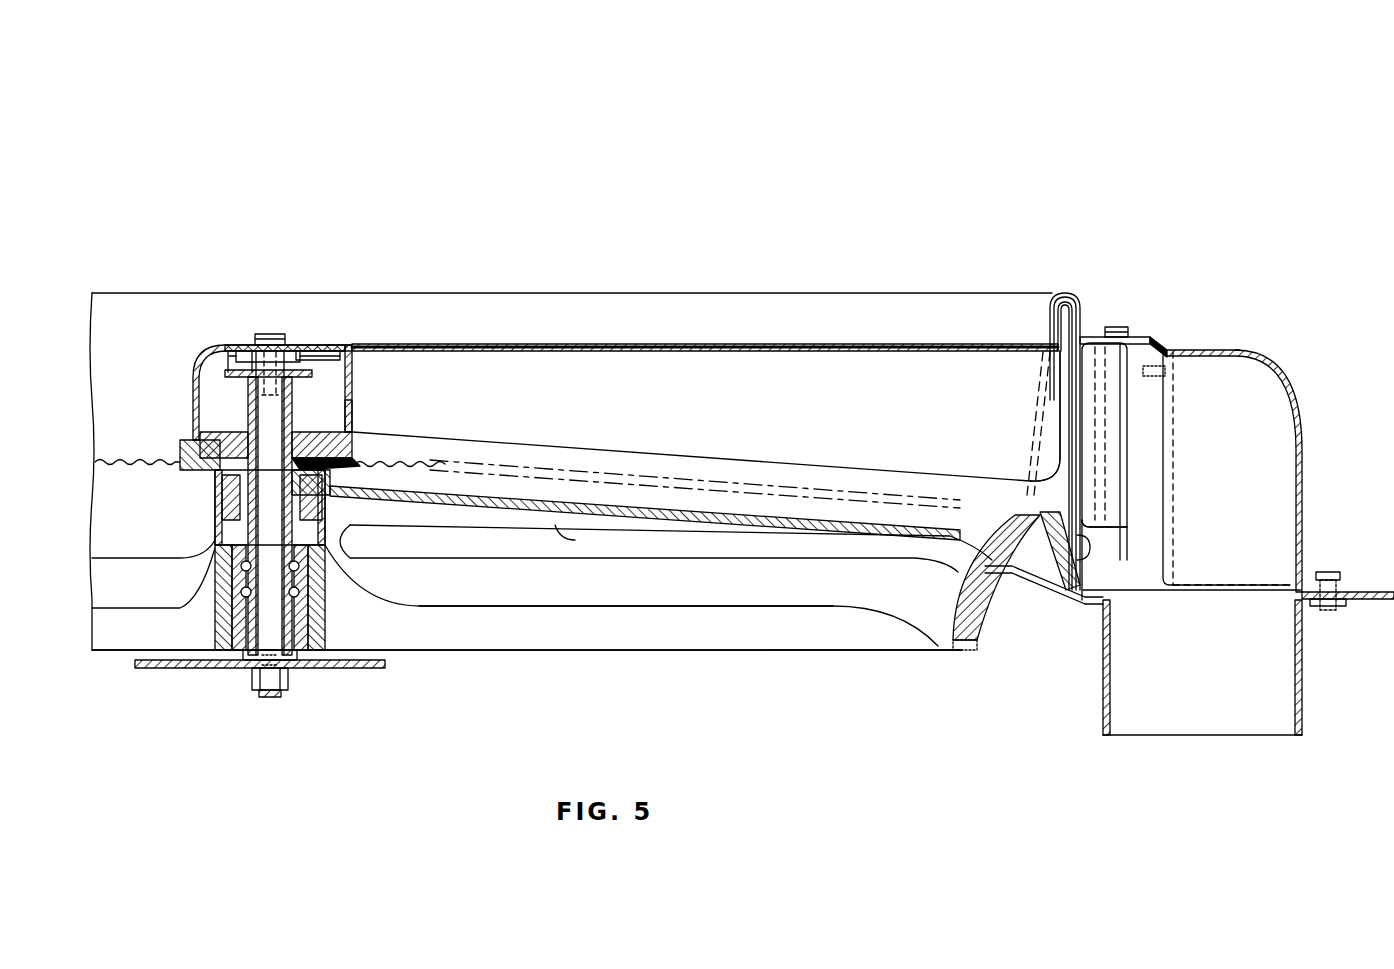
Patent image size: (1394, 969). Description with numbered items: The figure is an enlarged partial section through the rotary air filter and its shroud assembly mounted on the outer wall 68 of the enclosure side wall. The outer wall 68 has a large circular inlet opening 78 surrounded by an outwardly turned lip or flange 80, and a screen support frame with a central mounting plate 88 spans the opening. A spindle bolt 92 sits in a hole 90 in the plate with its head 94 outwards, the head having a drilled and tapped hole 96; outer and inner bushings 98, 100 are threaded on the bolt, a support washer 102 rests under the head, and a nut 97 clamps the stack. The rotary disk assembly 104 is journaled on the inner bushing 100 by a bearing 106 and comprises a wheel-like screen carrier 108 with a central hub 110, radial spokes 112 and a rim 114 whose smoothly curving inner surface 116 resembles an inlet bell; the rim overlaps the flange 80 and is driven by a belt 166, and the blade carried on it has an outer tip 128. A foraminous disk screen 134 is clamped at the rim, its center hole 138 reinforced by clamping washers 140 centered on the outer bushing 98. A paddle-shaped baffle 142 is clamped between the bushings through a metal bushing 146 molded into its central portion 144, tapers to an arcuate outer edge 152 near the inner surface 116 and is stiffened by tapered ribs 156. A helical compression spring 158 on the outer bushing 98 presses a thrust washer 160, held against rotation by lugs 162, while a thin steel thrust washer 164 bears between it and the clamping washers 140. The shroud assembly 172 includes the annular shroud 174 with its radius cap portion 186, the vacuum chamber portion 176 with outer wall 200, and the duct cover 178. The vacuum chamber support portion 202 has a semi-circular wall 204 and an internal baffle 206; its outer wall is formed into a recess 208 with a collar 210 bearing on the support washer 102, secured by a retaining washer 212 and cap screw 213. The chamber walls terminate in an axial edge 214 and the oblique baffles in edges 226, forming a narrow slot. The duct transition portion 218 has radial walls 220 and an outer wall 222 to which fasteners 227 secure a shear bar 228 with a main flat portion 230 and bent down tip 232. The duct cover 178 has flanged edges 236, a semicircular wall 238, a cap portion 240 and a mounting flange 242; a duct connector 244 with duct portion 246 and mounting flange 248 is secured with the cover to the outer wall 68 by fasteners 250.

The outer wall 68 is at (1075, 604).
The inlet opening 78 is at (997, 570).
The lip or flange 80 is at (1036, 580).
The central mounting plate 88 is at (370, 668).
The hole 90 is at (252, 675).
The spindle bolt 92 is at (268, 698).
The head 94 is at (288, 352).
The drilled and tapped hole 96 is at (284, 385).
The nut 97 is at (286, 688).
The outer bushing 98 is at (228, 376).
The inner bushing 100 is at (296, 672).
The support washer 102 is at (312, 373).
The rotary disk-like screen or filter element assembly 104 is at (783, 680).
The bearing 106 is at (232, 568).
The screen carrier 108 is at (525, 618).
The central hub 110 is at (322, 600).
The radial spokes 112 is at (663, 610).
The rim 114 is at (850, 655).
The inner surface 116 is at (958, 592).
The outer tip 128 is at (1052, 322).
The screen 134 is at (550, 472).
The center hole 138 is at (352, 414).
The clamping washers 140 is at (182, 450).
The baffle 142 is at (560, 543).
The central portion 144 is at (352, 541).
The metal bushing 146 is at (237, 522).
The arcuate outer edge 152 is at (960, 550).
The tapered ribs 156 is at (520, 526).
The helical compression spring 158 is at (330, 485).
The thrust washer 160 is at (355, 458).
The lugs 162 is at (224, 492).
The thin steel thrust washer 164 is at (232, 450).
The belt 166 is at (977, 652).
The annular shroud assembly 172 is at (805, 276).
The annular shroud 174 is at (925, 282).
The partial vacuum chamber portion 176 is at (447, 320).
The duct cover 178 is at (1268, 441).
The radius cap portion 186 is at (1070, 295).
The outer wall 200 is at (540, 345).
The vacuum chamber support portion 202 is at (275, 368).
The semi-circular wall 204 is at (195, 385).
The internal baffle 206 is at (352, 396).
The recess 208 is at (240, 350).
The collar 210 is at (302, 352).
The retaining washer 212 is at (256, 350).
The cap screw 213 is at (276, 336).
The edge 214 is at (1019, 423).
The duct transition portion 218 is at (1188, 405).
The walls 220 is at (1152, 490).
The outer wall 222 is at (1140, 338).
The edges 226 is at (1078, 424).
The fasteners 227 is at (1118, 325).
The shear bar 228 is at (1145, 432).
The main flat portion 230 is at (1112, 414).
The bent down tip 232 is at (1112, 516).
The flanged edges 236 is at (1162, 346).
The semicircular wall 238 is at (1302, 490).
The cap portion 240 is at (1230, 350).
The mounting flange 242 is at (1338, 585).
The duct connector 244 is at (1202, 719).
The duct portion 246 is at (1112, 672).
The mounting flange 248 is at (1340, 606).
The fasteners 250 is at (1327, 570).